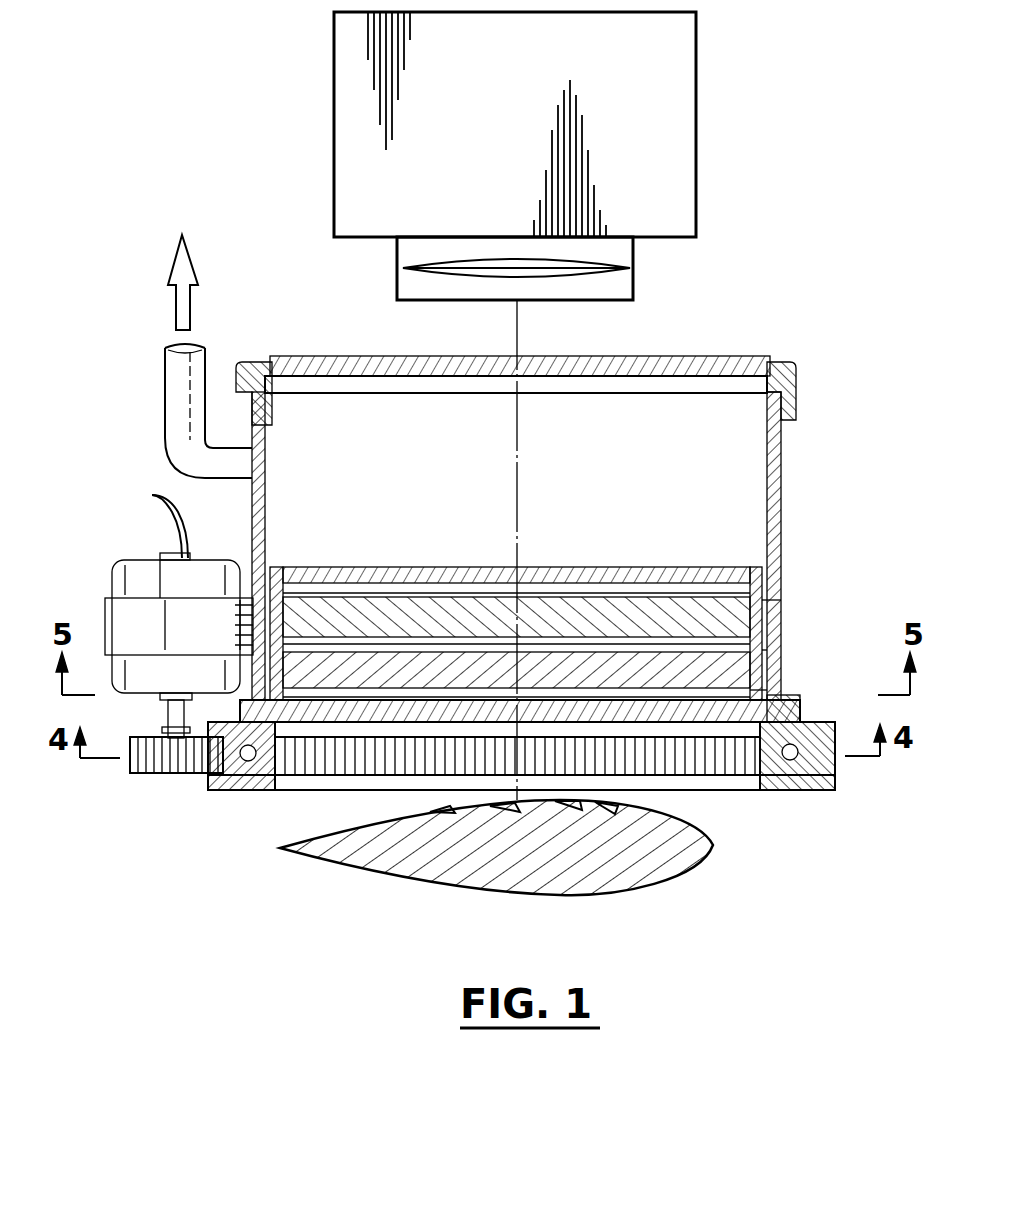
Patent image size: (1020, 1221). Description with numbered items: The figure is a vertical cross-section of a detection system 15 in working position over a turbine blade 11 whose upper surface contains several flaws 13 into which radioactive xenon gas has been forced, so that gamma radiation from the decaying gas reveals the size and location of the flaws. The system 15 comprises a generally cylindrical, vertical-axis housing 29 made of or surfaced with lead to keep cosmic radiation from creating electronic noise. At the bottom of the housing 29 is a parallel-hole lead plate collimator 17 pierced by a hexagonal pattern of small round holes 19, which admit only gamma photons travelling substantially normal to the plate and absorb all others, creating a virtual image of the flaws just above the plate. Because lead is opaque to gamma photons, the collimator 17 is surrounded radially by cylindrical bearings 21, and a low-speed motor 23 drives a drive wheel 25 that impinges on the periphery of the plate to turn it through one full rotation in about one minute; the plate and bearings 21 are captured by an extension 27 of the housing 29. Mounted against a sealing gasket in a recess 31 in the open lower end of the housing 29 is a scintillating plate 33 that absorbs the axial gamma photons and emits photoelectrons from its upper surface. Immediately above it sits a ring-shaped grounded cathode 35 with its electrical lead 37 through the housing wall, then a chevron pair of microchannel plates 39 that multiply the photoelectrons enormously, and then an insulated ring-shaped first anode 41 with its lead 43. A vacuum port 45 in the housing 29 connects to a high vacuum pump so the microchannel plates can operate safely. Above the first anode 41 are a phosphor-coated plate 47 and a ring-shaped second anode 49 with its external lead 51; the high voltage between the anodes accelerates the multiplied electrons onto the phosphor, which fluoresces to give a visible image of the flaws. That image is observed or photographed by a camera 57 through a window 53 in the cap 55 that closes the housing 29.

The turbine blade 11 is at (375, 880).
The flaws 13 is at (610, 806).
The detection system 15 is at (800, 468).
The parallel-hole lead plate collimator 17 is at (272, 790).
The holes 19 is at (680, 776).
The cylindrical bearings 21 is at (230, 790).
The low-speed motor 23 is at (140, 555).
The drive wheel 25 is at (148, 775).
The extension 27 is at (840, 778).
The housing 29 is at (774, 610).
The recess 31 is at (168, 712).
The scintillating plate 33 is at (340, 722).
The cathode 35 is at (772, 655).
The electrical lead 37 is at (781, 682).
The microchannel plates 39 is at (433, 600).
The first anode 41 is at (550, 600).
The lead 43 is at (762, 584).
The vacuum port 45 is at (266, 465).
The phosphor-coated plate 47 is at (602, 580).
The second anode 49 is at (676, 567).
The external lead 51 is at (796, 570).
The window 53 is at (690, 364).
The cap 55 is at (782, 360).
The camera 57 is at (530, 123).